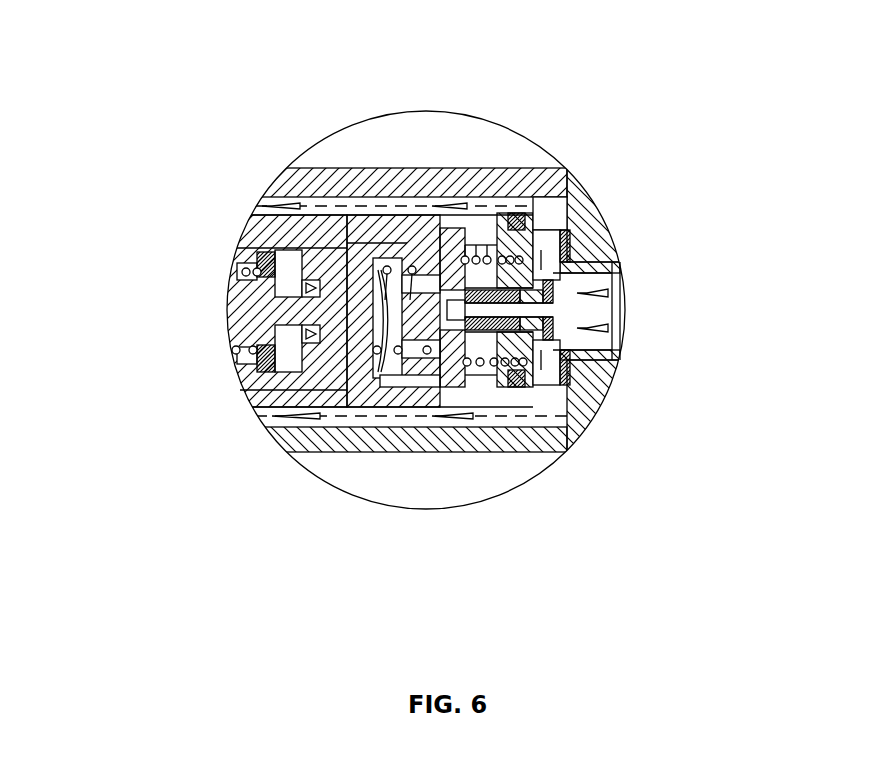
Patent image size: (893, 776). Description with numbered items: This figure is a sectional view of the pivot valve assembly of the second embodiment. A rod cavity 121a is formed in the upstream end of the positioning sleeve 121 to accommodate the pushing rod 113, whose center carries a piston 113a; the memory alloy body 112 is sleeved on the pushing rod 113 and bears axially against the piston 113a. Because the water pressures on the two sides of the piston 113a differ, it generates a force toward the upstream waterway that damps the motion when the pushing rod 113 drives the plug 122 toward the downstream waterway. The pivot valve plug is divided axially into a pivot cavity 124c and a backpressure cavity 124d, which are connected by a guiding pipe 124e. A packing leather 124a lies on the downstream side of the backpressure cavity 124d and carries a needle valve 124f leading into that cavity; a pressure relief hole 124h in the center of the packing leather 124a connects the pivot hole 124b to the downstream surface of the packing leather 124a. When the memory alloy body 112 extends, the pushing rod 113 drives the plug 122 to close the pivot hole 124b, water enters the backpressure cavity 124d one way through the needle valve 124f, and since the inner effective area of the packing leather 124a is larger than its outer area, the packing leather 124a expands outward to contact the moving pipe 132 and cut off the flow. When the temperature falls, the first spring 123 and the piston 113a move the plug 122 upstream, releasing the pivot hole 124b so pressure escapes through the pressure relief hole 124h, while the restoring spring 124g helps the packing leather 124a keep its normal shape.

The memory alloy body 112 is at (235, 268).
The pushing rod 113 is at (235, 305).
The piston 113a is at (330, 378).
The positioning sleeve 121 is at (237, 380).
The rod cavity 121a is at (235, 352).
The plug 122 is at (348, 360).
The first spring 123 is at (378, 265).
The packing leather 124a is at (533, 230).
The pivot hole 124b is at (453, 393).
The pivot cavity 124c is at (393, 285).
The backpressure cavity 124d is at (468, 250).
The guiding pipe 124e is at (432, 262).
The needle valve 124f is at (535, 392).
The restoring spring 124g is at (497, 385).
The pressure relief hole 124h is at (540, 310).
The moving pipe 132 is at (620, 268).